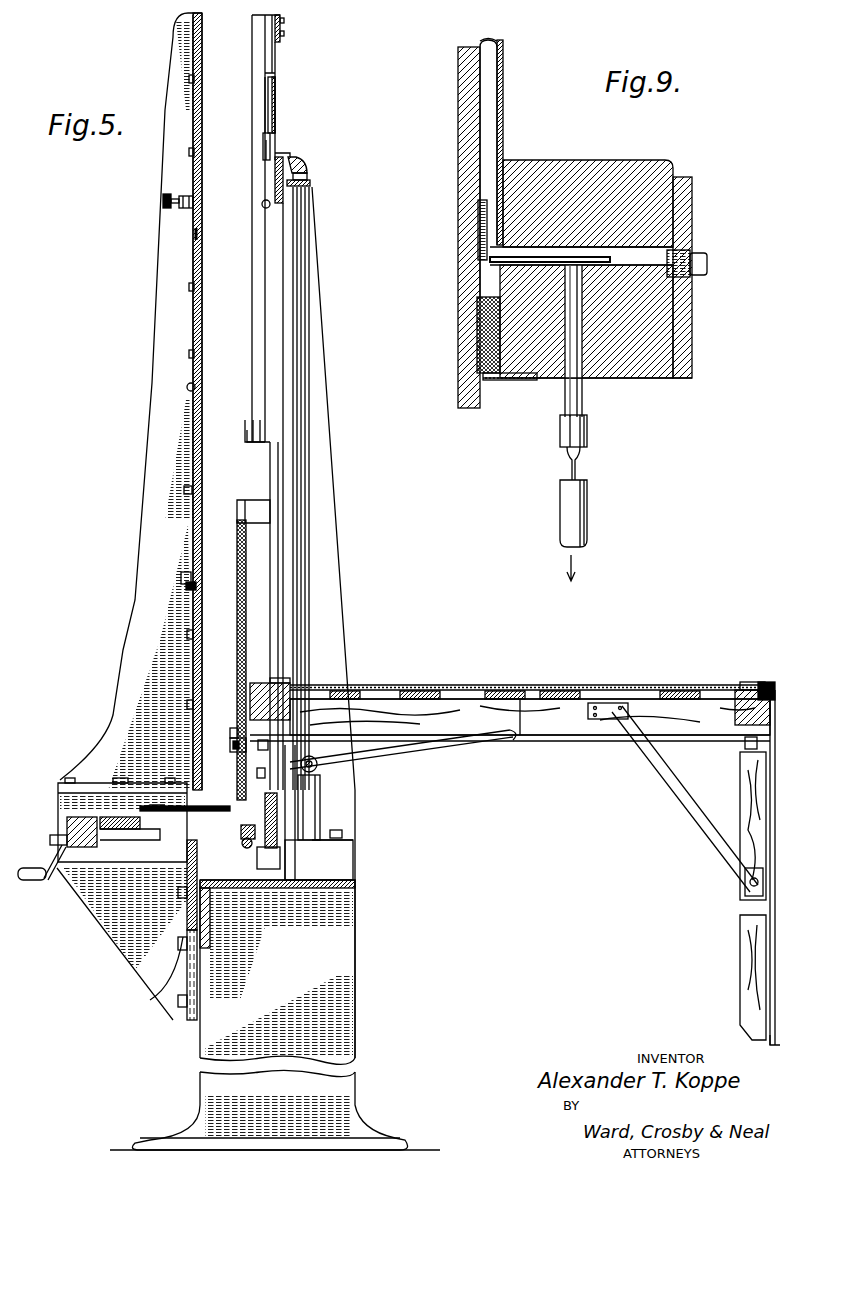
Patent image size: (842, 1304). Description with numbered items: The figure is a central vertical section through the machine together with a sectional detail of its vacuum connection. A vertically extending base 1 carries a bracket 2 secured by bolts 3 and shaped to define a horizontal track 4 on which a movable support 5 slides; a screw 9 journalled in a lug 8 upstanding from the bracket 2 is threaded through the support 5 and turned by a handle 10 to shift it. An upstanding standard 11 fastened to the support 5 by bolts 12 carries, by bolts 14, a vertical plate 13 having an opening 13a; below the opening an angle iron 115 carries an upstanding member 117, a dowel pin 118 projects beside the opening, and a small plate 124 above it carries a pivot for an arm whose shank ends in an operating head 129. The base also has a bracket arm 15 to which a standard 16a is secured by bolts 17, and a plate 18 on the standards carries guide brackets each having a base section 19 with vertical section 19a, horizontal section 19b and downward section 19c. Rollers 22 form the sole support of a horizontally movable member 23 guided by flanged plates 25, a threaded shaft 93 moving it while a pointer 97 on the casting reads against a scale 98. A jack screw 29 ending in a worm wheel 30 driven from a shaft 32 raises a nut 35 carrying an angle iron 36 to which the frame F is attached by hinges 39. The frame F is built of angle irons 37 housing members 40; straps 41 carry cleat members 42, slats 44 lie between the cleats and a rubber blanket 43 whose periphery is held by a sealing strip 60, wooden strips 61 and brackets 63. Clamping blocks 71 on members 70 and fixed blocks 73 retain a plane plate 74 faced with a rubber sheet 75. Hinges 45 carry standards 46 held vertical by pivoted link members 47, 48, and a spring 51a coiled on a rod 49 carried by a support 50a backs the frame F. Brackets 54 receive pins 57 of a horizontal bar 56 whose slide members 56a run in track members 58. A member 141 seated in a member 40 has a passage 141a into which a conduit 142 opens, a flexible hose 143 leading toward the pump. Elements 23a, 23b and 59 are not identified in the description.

In FIG. 5, the base 1 is at (350, 1085).
In FIG. 5, the bracket 2 is at (127, 940).
In FIG. 5, the bolts 3 is at (183, 942).
In FIG. 5, the track 4 is at (55, 835).
In FIG. 5, the movable support 5 is at (128, 815).
In FIG. 5, the lug 8 is at (80, 818).
In FIG. 5, the screw 9 is at (135, 830).
In FIG. 5, the handle 10 is at (55, 873).
In FIG. 5, the upstanding standard 11 is at (152, 383).
In FIG. 5, the bolts 12 is at (70, 780).
In FIG. 5, the vertical plate 13 is at (203, 78).
In FIG. 9, the vertical plate 13 is at (460, 103).
In FIG. 5, the opening 13a is at (200, 232).
In FIG. 5, the bolts 14 is at (184, 490).
In FIG. 5, the bracket arm 15 is at (292, 862).
In FIG. 5, the standard 16a is at (318, 437).
In FIG. 5, the bolts 17 is at (342, 826).
In FIG. 5, the horizontal plate 18 is at (311, 183).
In FIG. 5, the bracket base section 19 is at (308, 174).
In FIG. 5, the upwardly extending vertical section 19a is at (300, 165).
In FIG. 5, the horizontal section 19b is at (285, 157).
In FIG. 5, the downwardly extending vertical section 19c is at (275, 170).
In FIG. 5, the roller 22 is at (265, 888).
In FIG. 5, the member 23 is at (280, 200).
In FIG. 5, the rod lower end 23a is at (257, 773).
In FIG. 5, the rod guide 23b is at (272, 545).
In FIG. 5, the flanged plate 25 is at (257, 855).
In FIG. 5, the jack screw 29 is at (237, 622).
In FIG. 5, the worm wheel 30 is at (245, 832).
In FIG. 5, the shaft 32 is at (283, 793).
In FIG. 5, the nut 35 is at (230, 742).
In FIG. 5, the angle iron 36 is at (236, 730).
In FIG. 5, the angle iron 37 is at (250, 692).
In FIG. 9, the angle iron 37 is at (692, 222).
In FIG. 5, the hinges 39 is at (268, 745).
In FIG. 9, the member 40 is at (645, 167).
In FIG. 5, the straps 41 is at (665, 737).
In FIG. 5, the cleat member 42 is at (575, 712).
In FIG. 5, the flexible member 43 is at (557, 691).
In FIG. 9, the flexible member 43 is at (504, 100).
In FIG. 5, the slats 44 is at (521, 702).
In FIG. 5, the hinges 45 is at (760, 740).
In FIG. 5, the standard 46 is at (748, 918).
In FIG. 5, the link member 47 is at (660, 788).
In FIG. 5, the link member 48 is at (705, 842).
In FIG. 5, the rod 49 is at (318, 764).
In FIG. 5, the support 50a is at (318, 830).
In FIG. 5, the spring 51a is at (395, 745).
In FIG. 5, the bracket 54 is at (750, 760).
In FIG. 5, the horizontal bar 56 is at (268, 117).
In FIG. 5, the slide member 56a is at (276, 97).
In FIG. 5, the pins 57 is at (264, 150).
In FIG. 5, the vertical track member 58 is at (272, 70).
In FIG. 5, the slide cap 59 is at (284, 28).
In FIG. 5, the sealing strip 60 is at (385, 684).
In FIG. 9, the sealing strip 60 is at (478, 355).
In FIG. 9, the wooden strips 61 is at (520, 381).
In FIG. 9, the brackets 63 is at (500, 381).
In FIG. 5, the member 70 is at (737, 702).
In FIG. 5, the clamping block 71 is at (748, 690).
In FIG. 5, the clamping block 73 is at (285, 682).
In FIG. 9, the clamping block 73 is at (483, 220).
In FIG. 5, the plane plate 74 is at (503, 692).
In FIG. 9, the plane plate 74 is at (492, 68).
In FIG. 5, the rubber sheet 75 is at (465, 685).
In FIG. 9, the rubber sheet 75 is at (484, 40).
In FIG. 5, the threaded shaft 93 is at (242, 843).
In FIG. 5, the pointer 97 is at (232, 808).
In FIG. 5, the scale 98 is at (143, 810).
In FIG. 5, the angle iron 115 is at (185, 583).
In FIG. 5, the upstanding member 117 is at (181, 575).
In FIG. 5, the dowel pin 118 is at (195, 387).
In FIG. 5, the small plate 124 is at (202, 203).
In FIG. 5, the operating head 129 is at (163, 200).
In FIG. 9, the member 141 is at (605, 133).
In FIG. 9, the passage 141a is at (520, 260).
In FIG. 9, the conduit 142 is at (583, 405).
In FIG. 9, the flexible hose 143 is at (583, 522).
In FIG. 5, the frame F is at (440, 742).